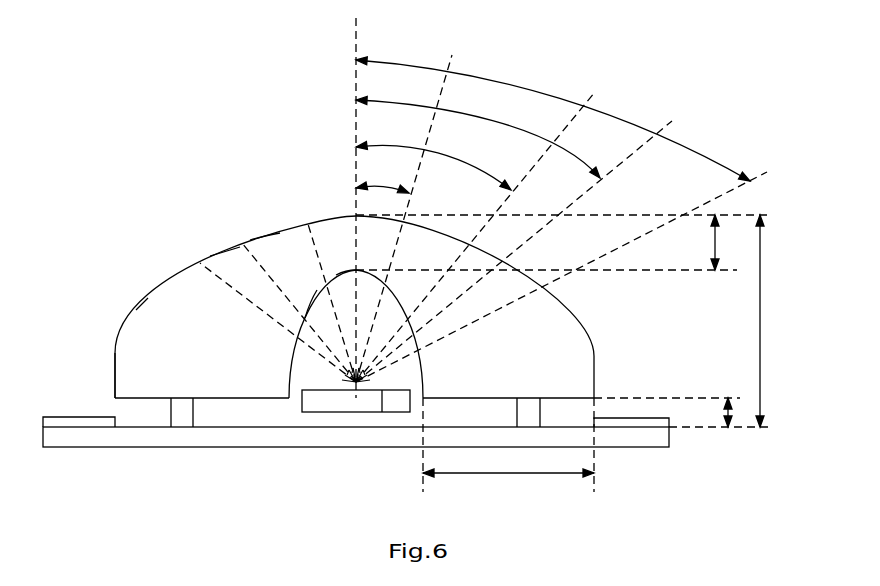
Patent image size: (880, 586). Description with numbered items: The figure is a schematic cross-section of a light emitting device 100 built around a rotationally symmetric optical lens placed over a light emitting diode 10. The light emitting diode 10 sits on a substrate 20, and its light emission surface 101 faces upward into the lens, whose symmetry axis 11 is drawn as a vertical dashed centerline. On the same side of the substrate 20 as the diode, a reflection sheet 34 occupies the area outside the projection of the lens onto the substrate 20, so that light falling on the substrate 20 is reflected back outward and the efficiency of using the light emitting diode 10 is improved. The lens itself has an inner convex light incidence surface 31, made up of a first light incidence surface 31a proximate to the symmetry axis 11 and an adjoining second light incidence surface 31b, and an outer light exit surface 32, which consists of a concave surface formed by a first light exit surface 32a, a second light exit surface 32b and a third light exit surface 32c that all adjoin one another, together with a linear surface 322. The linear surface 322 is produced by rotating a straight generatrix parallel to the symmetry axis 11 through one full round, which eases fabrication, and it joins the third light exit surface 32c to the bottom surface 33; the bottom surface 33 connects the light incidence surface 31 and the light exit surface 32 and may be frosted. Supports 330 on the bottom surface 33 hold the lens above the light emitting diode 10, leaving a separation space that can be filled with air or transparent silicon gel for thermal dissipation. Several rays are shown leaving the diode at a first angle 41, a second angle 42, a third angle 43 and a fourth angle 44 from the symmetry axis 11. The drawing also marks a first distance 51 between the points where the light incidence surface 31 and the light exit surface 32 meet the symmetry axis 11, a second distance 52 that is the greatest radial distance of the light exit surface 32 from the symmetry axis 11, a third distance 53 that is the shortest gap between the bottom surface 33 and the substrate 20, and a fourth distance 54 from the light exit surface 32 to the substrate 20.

The light emitting device 100 is at (164, 69).
The symmetry axis 11 is at (356, 40).
The light emitting diode 10 is at (334, 402).
The light emission surface 101 is at (382, 412).
The substrate 20 is at (133, 437).
The light incidence surface 31 is at (320, 152).
The first light incidence surface 31a is at (344, 271).
The second light incidence surface 31b is at (311, 306).
The light exit surface 32 is at (180, 187).
The first light exit surface 32a is at (260, 236).
The second light exit surface 32b is at (223, 251).
The third light exit surface 32c is at (142, 305).
The linear surface 322 is at (115, 375).
The bottom surface 33 is at (248, 398).
The support 330 is at (179, 412).
The reflection sheet 34 is at (79, 421).
The first angle 41 is at (382, 179).
The second angle 42 is at (433, 161).
The third angle 43 is at (478, 138).
The fourth angle 44 is at (553, 119).
The first distance 51 is at (728, 242).
The second distance 52 is at (508, 485).
The third distance 53 is at (714, 412).
The fourth distance 54 is at (774, 321).